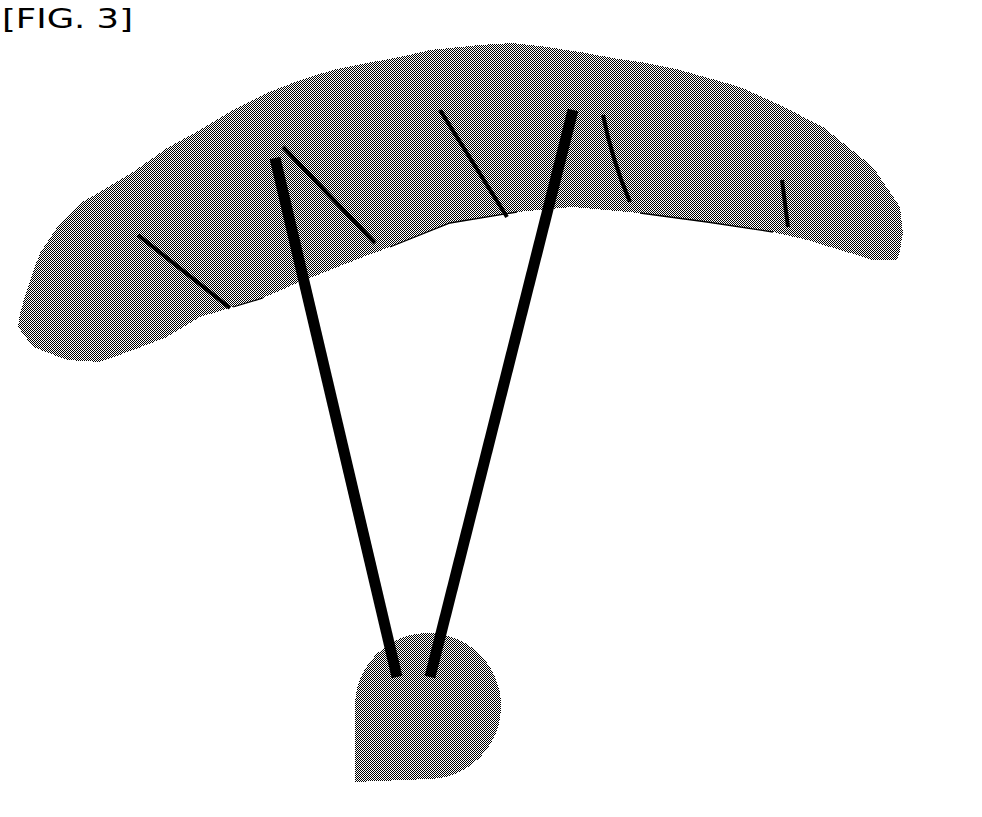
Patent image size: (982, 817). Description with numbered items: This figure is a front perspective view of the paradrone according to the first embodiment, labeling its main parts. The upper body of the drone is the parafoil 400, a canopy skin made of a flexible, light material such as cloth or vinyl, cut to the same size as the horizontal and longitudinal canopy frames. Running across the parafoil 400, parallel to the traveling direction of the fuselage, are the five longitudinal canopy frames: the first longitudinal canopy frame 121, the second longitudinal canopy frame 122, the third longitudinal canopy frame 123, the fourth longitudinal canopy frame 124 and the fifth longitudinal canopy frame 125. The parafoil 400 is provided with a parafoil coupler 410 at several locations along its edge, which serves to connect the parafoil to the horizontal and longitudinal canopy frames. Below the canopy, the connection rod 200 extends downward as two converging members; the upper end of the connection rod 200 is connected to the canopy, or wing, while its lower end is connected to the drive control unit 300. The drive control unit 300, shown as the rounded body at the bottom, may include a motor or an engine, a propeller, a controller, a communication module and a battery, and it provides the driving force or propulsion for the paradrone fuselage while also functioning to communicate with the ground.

The parafoil 400 is at (103, 345).
The parafoil coupler 410 is at (240, 323).
The first longitudinal canopy frame 121 is at (793, 213).
The second longitudinal canopy frame 122 is at (615, 140).
The third longitudinal canopy frame 123 is at (468, 158).
The fourth longitudinal canopy frame 124 is at (332, 197).
The fifth longitudinal canopy frame 125 is at (183, 272).
The connection rod 200 is at (485, 433).
The drive control unit 300 is at (453, 705).